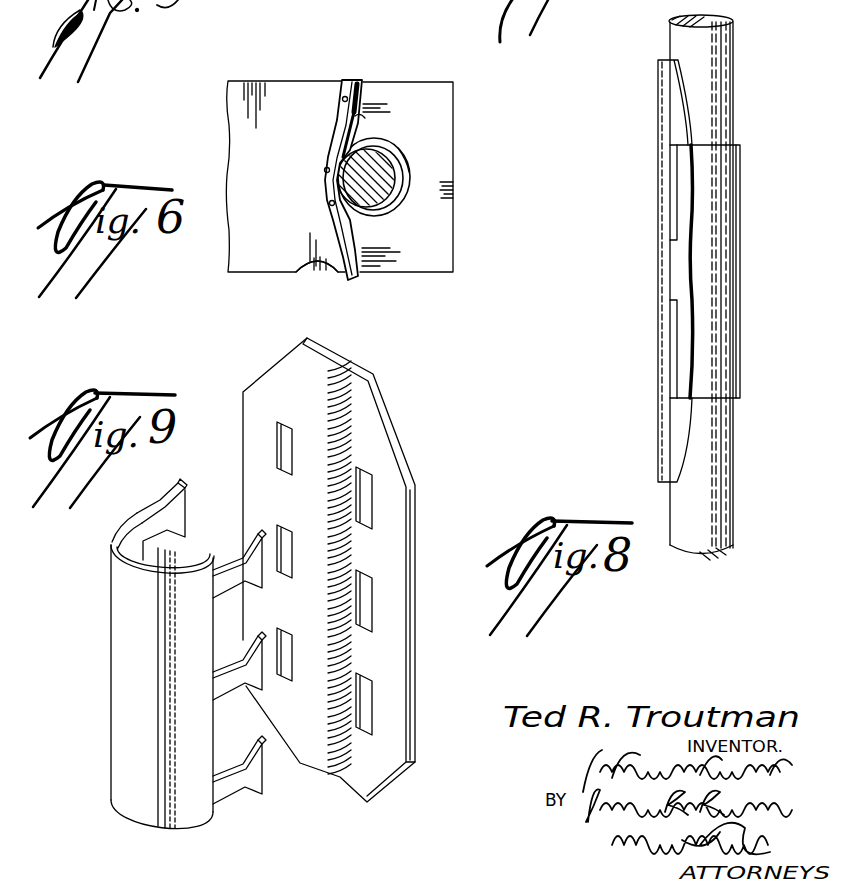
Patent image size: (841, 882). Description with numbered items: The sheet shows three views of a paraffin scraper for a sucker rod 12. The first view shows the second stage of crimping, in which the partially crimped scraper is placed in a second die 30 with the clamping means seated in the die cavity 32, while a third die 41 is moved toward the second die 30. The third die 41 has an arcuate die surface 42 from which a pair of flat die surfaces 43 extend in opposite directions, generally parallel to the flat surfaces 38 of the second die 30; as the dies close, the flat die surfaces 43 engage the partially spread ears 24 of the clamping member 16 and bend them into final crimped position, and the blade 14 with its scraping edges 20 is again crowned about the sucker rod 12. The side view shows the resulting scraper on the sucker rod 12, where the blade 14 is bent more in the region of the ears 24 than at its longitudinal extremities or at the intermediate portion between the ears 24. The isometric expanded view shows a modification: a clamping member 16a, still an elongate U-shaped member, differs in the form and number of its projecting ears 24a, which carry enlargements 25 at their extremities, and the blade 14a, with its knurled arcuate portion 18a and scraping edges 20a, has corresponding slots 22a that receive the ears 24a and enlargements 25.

In FIG. 6, the sucker rod 12 is at (386, 196).
In FIG. 8, the sucker rod 12 is at (727, 49).
In FIG. 6, the blade 14 is at (352, 281).
In FIG. 8, the blade 14 is at (658, 313).
In FIG. 6, the clamping member 16 is at (382, 219).
In FIG. 8, the clamping member 16 is at (740, 181).
In FIG. 6, the scraping edges 20 is at (357, 79).
In FIG. 8, the scraping edges 20 is at (686, 267).
In FIG. 6, the protruding ears 24 is at (310, 264).
In FIG. 8, the protruding ears 24 is at (672, 205).
In FIG. 6, the second die 30 is at (455, 92).
In FIG. 6, the die cavity 32 is at (403, 158).
In FIG. 6, the flat surfaces 38 is at (365, 117).
In FIG. 6, the third die 41 is at (267, 184).
In FIG. 6, the arcuate die surface 42 is at (325, 168).
In FIG. 6, the flat die surfaces 43 is at (362, 100).
In FIG. 9, the blade 14a is at (416, 507).
In FIG. 9, the clamping member 16a is at (111, 677).
In FIG. 9, the arcuate portion 18a is at (336, 413).
In FIG. 9, the scraping edges 20a is at (416, 590).
In FIG. 9, the slots 22a is at (278, 530).
In FIG. 9, the projecting ears 24a is at (224, 561).
In FIG. 9, the enlargements 25 is at (178, 482).